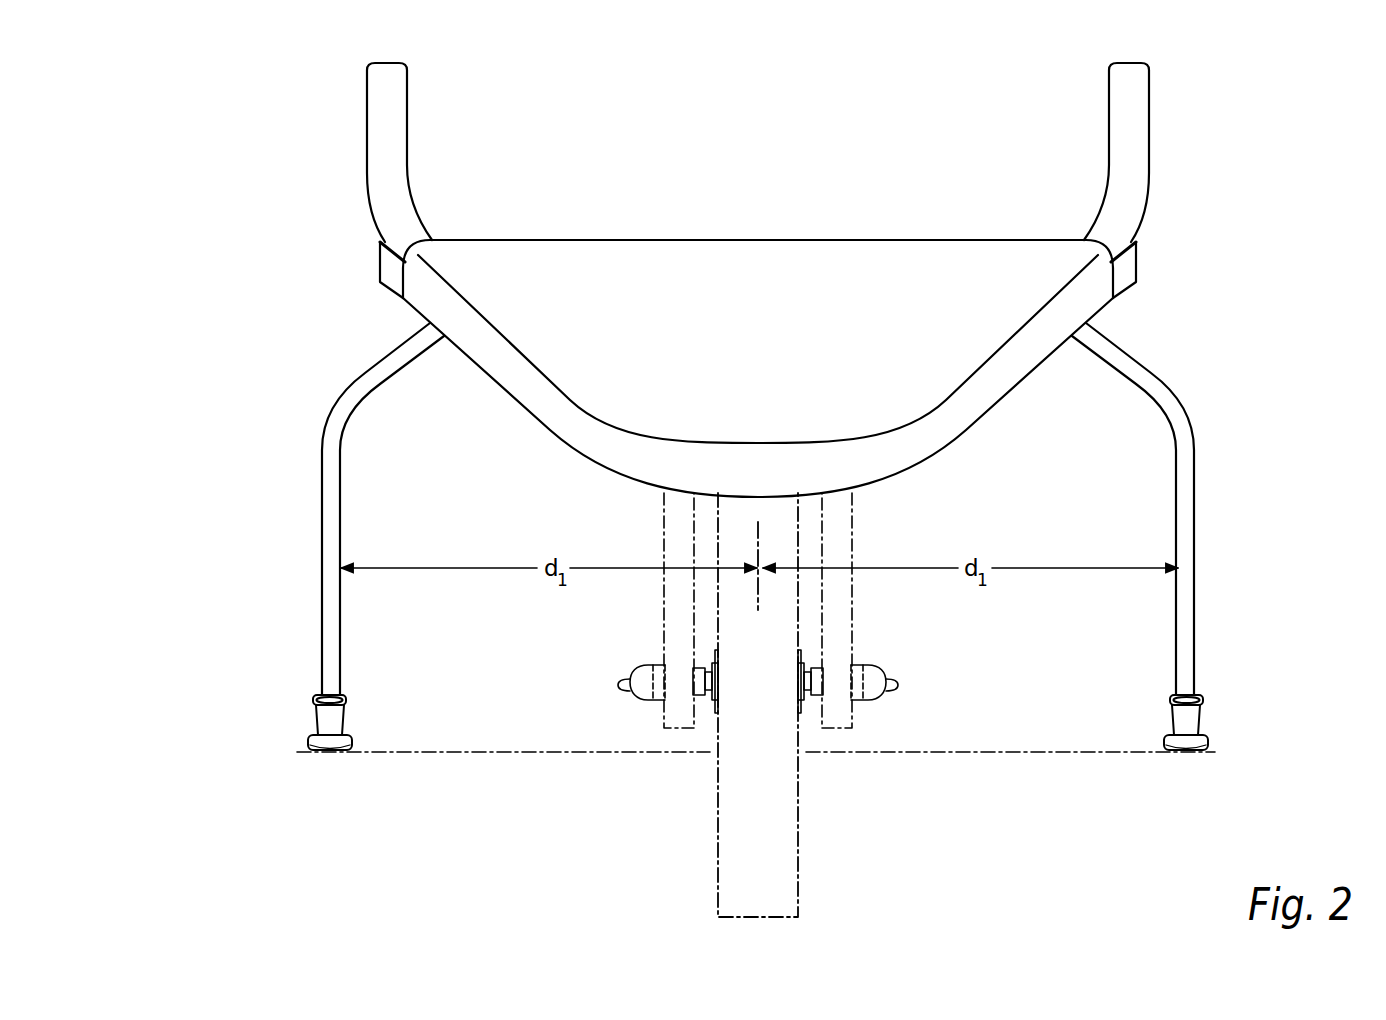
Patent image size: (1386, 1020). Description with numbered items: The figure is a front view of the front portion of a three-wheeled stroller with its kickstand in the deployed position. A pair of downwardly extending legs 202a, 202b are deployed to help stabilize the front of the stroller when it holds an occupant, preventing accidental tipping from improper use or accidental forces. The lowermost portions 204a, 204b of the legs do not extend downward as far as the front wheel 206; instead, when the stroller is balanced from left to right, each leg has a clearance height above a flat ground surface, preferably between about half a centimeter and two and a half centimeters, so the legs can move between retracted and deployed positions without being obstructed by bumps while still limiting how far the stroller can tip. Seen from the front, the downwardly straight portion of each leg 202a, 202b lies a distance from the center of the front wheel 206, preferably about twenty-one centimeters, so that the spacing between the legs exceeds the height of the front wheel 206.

The downwardly extending leg 202a is at (324, 450).
The downwardly extending leg 202b is at (1188, 466).
The lowermost portion of leg 204a is at (298, 751).
The lowermost portion of leg 204b is at (1212, 750).
The front wheel 206 is at (786, 855).